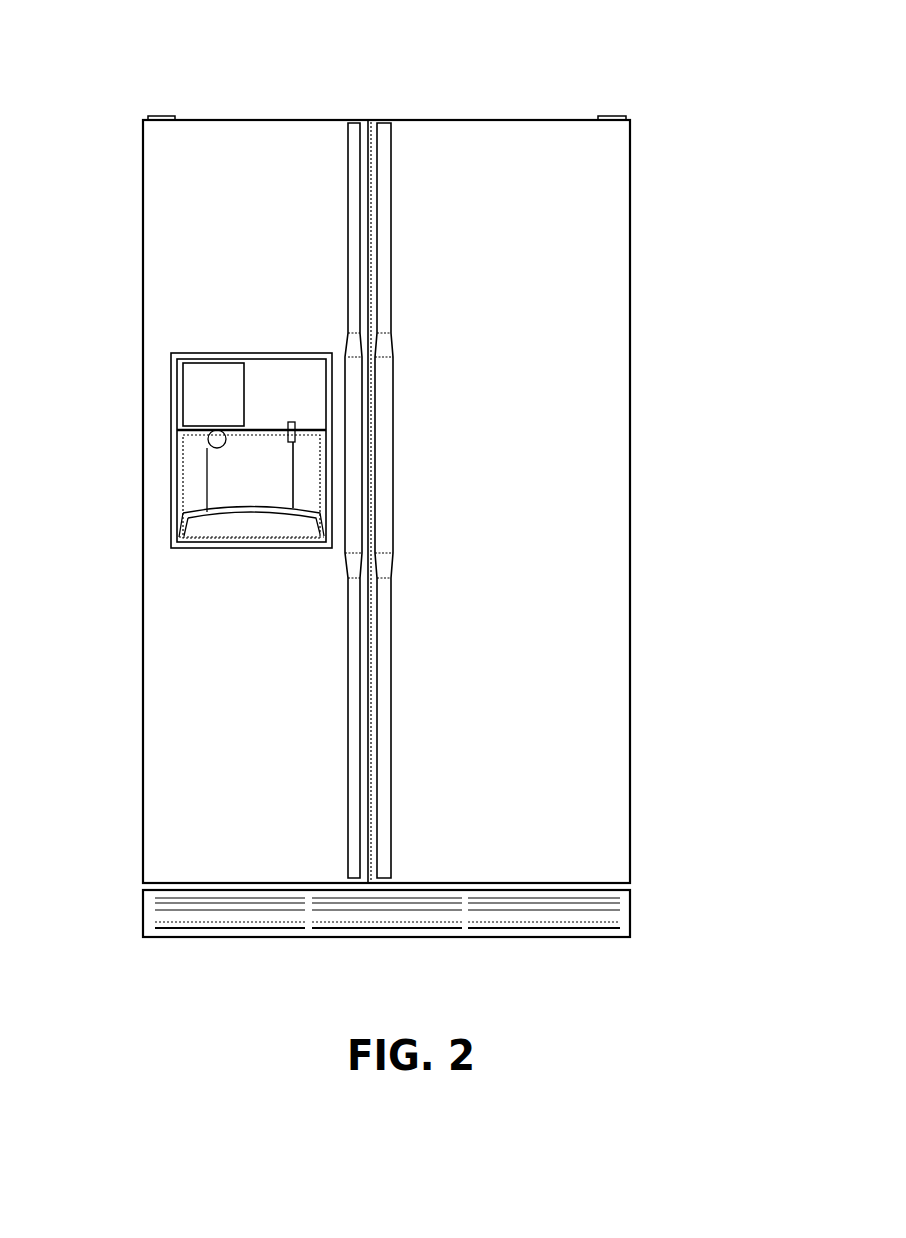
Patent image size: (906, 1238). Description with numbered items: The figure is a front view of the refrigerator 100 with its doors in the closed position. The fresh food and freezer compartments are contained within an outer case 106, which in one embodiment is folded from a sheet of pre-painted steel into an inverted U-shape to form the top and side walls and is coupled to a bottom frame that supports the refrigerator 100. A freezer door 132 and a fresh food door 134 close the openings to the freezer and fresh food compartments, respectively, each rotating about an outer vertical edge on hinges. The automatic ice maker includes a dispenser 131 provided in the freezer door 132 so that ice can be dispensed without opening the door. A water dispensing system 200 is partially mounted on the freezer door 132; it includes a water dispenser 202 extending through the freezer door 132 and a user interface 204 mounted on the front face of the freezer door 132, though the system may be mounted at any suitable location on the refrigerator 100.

The refrigerator 100 is at (398, 483).
The outer case 106 is at (172, 780).
The dispenser 131 is at (263, 381).
The freezer door 132 is at (160, 208).
The fresh food door 134 is at (602, 392).
The water dispensing system 200 is at (263, 480).
The water dispenser 202 is at (226, 446).
The user interface 204 is at (213, 378).